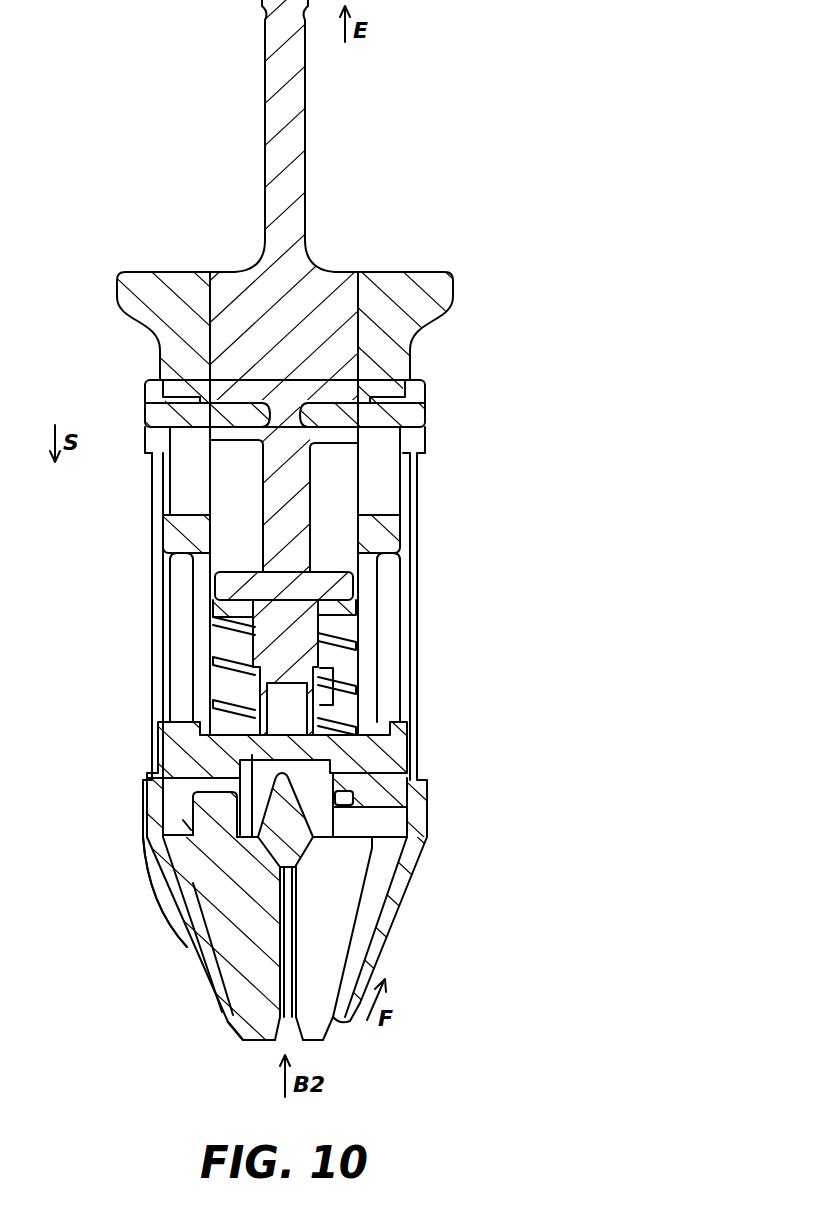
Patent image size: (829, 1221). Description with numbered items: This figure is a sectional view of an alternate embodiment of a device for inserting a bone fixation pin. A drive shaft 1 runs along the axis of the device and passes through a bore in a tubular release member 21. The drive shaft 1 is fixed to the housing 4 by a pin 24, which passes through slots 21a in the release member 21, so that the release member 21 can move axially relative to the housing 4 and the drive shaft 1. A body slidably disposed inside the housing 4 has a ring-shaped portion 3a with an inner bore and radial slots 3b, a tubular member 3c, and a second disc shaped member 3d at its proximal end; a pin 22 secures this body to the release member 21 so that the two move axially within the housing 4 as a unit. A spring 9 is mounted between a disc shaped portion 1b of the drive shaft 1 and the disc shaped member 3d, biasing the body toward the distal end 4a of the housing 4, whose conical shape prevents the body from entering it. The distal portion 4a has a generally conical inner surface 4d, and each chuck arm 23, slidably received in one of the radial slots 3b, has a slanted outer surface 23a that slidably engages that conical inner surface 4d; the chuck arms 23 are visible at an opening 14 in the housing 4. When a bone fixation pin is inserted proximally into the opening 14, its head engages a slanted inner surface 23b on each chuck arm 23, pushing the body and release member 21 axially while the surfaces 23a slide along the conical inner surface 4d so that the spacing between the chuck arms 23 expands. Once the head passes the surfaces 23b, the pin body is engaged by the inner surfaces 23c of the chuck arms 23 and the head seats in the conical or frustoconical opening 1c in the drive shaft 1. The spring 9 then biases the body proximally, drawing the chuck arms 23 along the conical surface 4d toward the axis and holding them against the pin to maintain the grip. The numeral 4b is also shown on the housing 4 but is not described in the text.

The drive shaft 1 is at (365, 304).
The disc shaped portion of drive shaft 1b is at (330, 567).
The conical or frustoconical opening 1c is at (300, 827).
The tubular release member 21 is at (450, 311).
The slots in release member 21a is at (380, 467).
The pin 24 is at (200, 403).
The housing 4 is at (50, 605).
The distal end of housing 4a is at (187, 947).
The sleeve outer wall 4b is at (152, 441).
The conical inner surface 4d is at (155, 883).
The spring 9 is at (340, 627).
The second disc shaped member 3d is at (333, 707).
The pin 22 is at (373, 747).
The tubular member 3c is at (333, 783).
The ring-shaped portion 3a is at (370, 807).
The radial slots 3b is at (187, 823).
The chuck arms 23 is at (333, 915).
The slanted outer surface 23a is at (353, 950).
The slanted inner surface 23b is at (290, 1038).
The inner surfaces of chuck arm 23c is at (267, 967).
The opening in housing 14 is at (228, 1022).